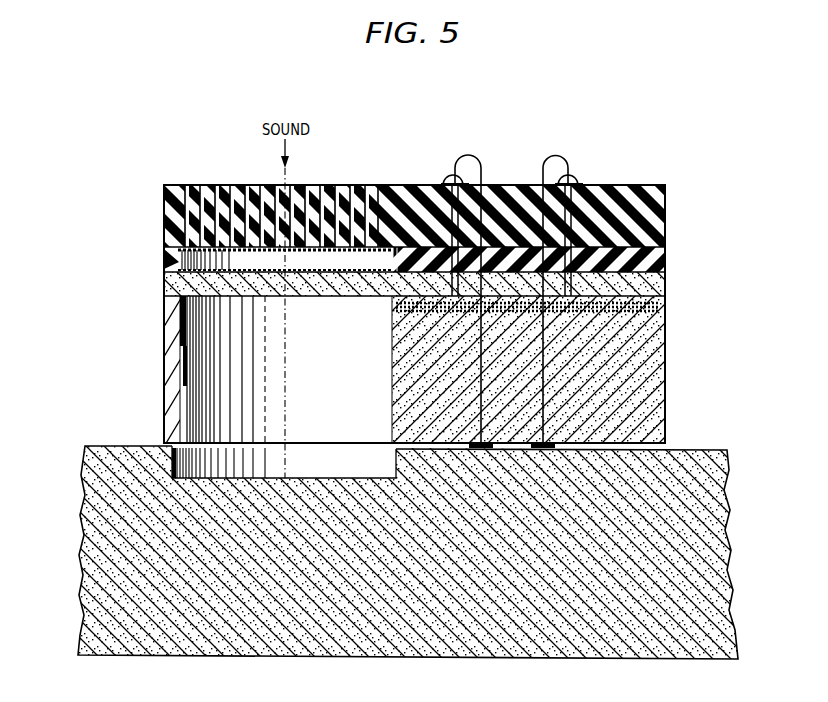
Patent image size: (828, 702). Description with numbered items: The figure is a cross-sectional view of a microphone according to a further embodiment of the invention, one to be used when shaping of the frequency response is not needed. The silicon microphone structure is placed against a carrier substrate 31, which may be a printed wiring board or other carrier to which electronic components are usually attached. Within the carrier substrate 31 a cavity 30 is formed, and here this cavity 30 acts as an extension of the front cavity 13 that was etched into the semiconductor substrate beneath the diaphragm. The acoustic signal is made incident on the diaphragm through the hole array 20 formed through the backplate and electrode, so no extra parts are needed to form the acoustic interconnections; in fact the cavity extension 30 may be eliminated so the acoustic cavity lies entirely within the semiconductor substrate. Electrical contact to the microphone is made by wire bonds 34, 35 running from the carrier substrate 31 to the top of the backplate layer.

The front acoustic cavity 13 is at (188, 381).
The array of holes 20 is at (332, 185).
The back acoustic cavity 30 is at (172, 457).
The carrier substrate 31 is at (93, 515).
The wire bond 34 is at (477, 157).
The wire bond 35 is at (546, 157).